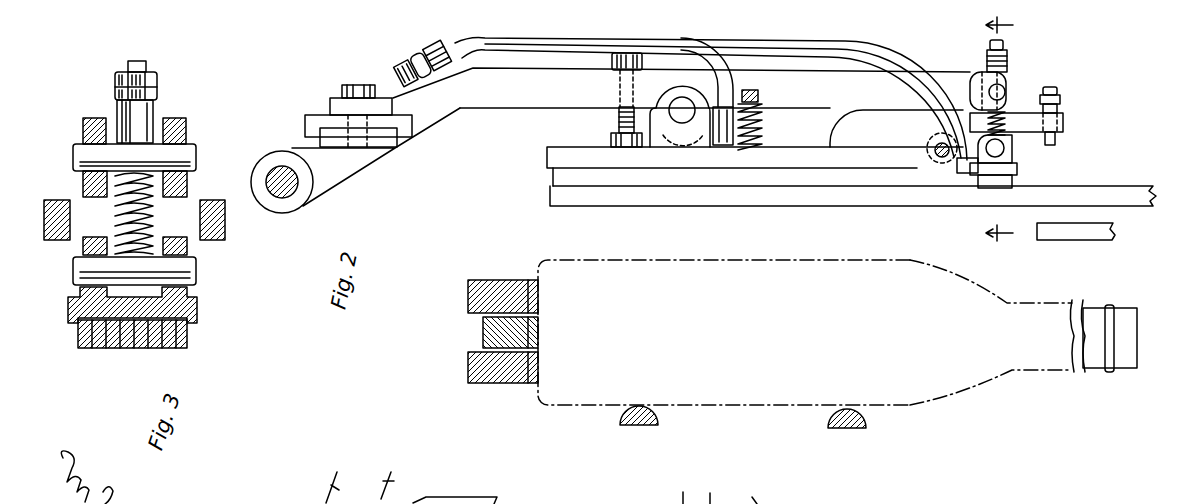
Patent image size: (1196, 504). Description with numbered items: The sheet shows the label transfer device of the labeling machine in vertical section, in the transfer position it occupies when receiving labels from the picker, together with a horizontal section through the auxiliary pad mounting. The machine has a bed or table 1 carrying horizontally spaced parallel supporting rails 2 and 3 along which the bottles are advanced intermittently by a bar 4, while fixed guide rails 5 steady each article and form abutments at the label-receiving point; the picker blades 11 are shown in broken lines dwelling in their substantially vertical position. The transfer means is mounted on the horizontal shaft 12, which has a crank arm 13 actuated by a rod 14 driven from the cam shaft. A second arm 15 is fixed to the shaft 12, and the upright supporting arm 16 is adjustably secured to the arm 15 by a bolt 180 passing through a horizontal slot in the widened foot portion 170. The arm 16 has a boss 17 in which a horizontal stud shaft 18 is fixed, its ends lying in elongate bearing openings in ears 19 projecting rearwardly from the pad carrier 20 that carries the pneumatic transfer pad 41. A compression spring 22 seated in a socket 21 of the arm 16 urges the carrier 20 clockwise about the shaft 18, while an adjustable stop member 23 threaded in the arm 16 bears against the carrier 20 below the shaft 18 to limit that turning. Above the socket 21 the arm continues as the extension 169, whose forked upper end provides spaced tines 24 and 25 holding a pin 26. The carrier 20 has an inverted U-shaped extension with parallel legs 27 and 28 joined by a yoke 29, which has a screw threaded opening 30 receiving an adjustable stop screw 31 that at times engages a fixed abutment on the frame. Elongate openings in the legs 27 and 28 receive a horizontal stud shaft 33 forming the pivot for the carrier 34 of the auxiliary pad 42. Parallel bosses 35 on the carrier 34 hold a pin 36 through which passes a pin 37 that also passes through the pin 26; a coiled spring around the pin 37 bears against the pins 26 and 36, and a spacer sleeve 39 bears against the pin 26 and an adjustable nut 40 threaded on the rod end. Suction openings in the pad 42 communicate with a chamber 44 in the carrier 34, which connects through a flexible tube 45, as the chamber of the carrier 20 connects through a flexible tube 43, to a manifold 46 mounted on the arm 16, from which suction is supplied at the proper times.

In FIG. 2, the bed or table 1 is at (945, 395).
In FIG. 2, the supporting rail 2 is at (470, 294).
In FIG. 2, the supporting rail 3 is at (471, 368).
In FIG. 2, the bar 4 is at (484, 338).
In FIG. 2, the fixed guide rails 5 is at (643, 426).
In FIG. 2, the picker blades 11 is at (803, 186).
In FIG. 2, the horizontal shaft 12 is at (286, 191).
In FIG. 2, the crank arm 13 is at (269, 195).
In FIG. 2, the rod 14 is at (552, 176).
In FIG. 2, the second arm 15 is at (352, 172).
In FIG. 2, the upright supporting arm 16 is at (489, 103).
In FIG. 2, the boss 17 is at (697, 140).
In FIG. 2, the horizontal stud shaft 18 is at (684, 114).
In FIG. 2, the ears 19 is at (672, 124).
In FIG. 2, the pad carrier 20 is at (852, 153).
In FIG. 2, the socket 21 is at (757, 97).
In FIG. 2, the compression spring 22 is at (764, 118).
In FIG. 2, the adjustable stop member 23 is at (613, 128).
In FIG. 3, the tine 24 is at (187, 125).
In FIG. 3, the tine 25 is at (83, 120).
In FIG. 3, the pin 26 is at (190, 158).
In FIG. 3, the leg 27 is at (223, 210).
In FIG. 2, the leg 27 is at (1005, 92).
In FIG. 3, the leg 28 is at (74, 268).
In FIG. 2, the leg 28 is at (915, 118).
In FIG. 2, the yoke 29 is at (1063, 117).
In FIG. 3, the screw threaded opening 30 is at (113, 212).
In FIG. 2, the screw threaded opening 30 is at (1050, 116).
In FIG. 2, the adjustable stop screw 31 is at (1066, 134).
In FIG. 2, the horizontal stud shaft 33 is at (937, 166).
In FIG. 3, the auxiliary pad carrier 34 is at (190, 322).
In FIG. 2, the auxiliary pad carrier 34 is at (966, 167).
In FIG. 3, the bosses 35 is at (86, 242).
In FIG. 2, the bosses 35 is at (1016, 143).
In FIG. 3, the pin 36 is at (190, 276).
In FIG. 2, the pin 36 is at (1003, 152).
In FIG. 3, the pin (rod) 37 is at (143, 227).
In FIG. 3, the spacer sleeve 39 is at (152, 118).
In FIG. 2, the spacer sleeve 39 is at (1087, 240).
In FIG. 3, the adjustable nut 40 is at (118, 96).
In FIG. 3, the transfer pad 41 is at (150, 352).
In FIG. 3, the auxiliary transfer pad 42 is at (177, 350).
In FIG. 2, the auxiliary transfer pad 42 is at (990, 180).
In FIG. 2, the flexible tube 43 is at (558, 42).
In FIG. 3, the chamber 44 is at (128, 318).
In FIG. 2, the flexible tube 45 is at (812, 55).
In FIG. 2, the manifold 46 is at (400, 73).
In FIG. 2, the extension 169 is at (972, 95).
In FIG. 2, the foot portion 170 is at (316, 118).
In FIG. 2, the bolt 180 is at (356, 86).